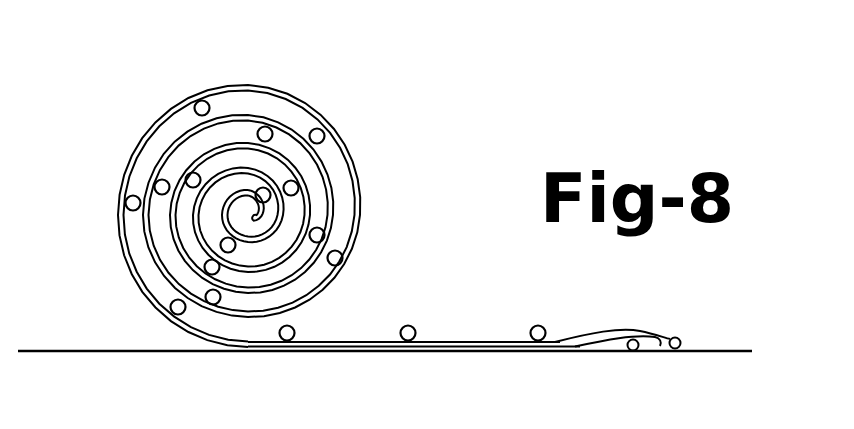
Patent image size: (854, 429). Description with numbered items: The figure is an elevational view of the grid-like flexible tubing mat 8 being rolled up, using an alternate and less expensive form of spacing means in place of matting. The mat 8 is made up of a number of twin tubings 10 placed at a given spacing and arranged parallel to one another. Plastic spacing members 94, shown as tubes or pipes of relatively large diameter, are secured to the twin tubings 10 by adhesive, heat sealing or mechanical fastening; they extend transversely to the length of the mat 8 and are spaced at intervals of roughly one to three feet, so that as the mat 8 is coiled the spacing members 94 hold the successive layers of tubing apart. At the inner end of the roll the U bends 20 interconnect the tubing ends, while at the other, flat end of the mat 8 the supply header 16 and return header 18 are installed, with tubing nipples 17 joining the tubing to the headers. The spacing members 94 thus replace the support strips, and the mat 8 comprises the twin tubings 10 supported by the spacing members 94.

The flexible tubing mat 8 is at (276, 92).
The spacing members 94 is at (301, 181).
The U bends 20 is at (264, 213).
The twin tubings 10 is at (468, 342).
The supply header 16 is at (633, 352).
The tubing nipples 17 is at (657, 350).
The return header 18 is at (680, 350).